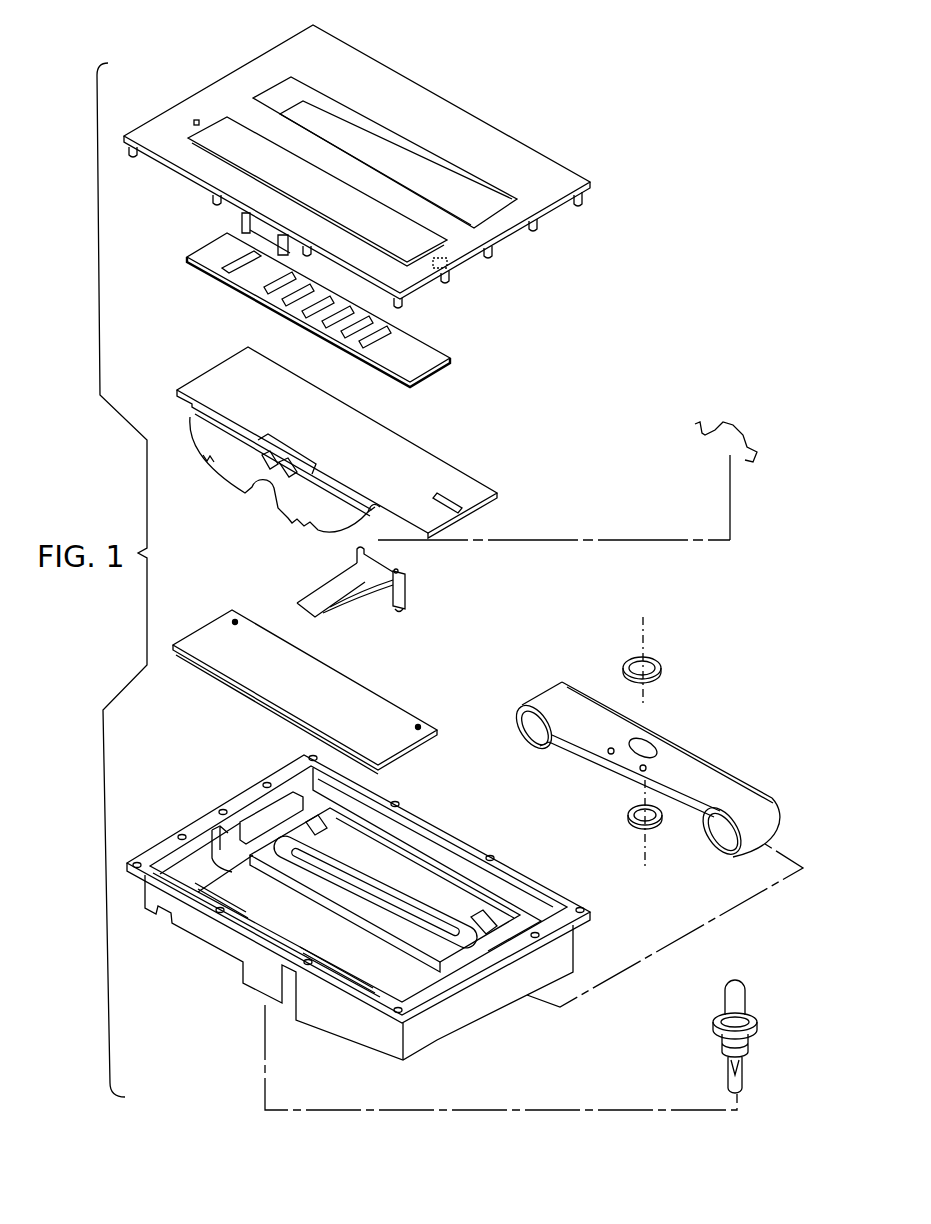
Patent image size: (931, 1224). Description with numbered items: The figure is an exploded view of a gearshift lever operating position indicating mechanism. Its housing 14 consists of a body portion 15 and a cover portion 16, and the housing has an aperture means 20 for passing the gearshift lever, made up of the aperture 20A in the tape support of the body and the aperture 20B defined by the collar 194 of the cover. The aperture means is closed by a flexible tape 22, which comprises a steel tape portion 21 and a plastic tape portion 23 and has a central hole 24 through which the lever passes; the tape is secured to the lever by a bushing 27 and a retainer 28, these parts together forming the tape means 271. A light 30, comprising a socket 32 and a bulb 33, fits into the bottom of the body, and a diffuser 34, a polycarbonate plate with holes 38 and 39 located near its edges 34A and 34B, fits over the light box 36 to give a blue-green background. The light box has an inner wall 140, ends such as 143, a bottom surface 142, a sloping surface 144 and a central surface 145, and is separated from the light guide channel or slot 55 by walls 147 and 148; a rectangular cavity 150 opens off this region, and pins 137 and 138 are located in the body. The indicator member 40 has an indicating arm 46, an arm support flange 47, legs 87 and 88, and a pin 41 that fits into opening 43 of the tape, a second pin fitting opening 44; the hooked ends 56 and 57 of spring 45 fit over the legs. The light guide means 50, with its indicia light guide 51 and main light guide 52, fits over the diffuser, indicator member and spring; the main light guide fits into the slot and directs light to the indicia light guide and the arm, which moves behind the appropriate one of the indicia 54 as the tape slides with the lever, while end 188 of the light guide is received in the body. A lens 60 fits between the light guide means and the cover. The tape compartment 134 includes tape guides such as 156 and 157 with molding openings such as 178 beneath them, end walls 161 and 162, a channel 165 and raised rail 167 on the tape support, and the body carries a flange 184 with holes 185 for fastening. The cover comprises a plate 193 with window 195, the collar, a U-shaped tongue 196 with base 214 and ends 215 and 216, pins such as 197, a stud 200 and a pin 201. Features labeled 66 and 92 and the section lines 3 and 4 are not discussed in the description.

The housing 14 is at (180, 1046).
The body portion 15 is at (383, 917).
The cover portion 16 is at (567, 182).
The aperture means 20 is at (394, 170).
The aperture 20A is at (415, 872).
The aperture 20B is at (448, 185).
The steel tape portion 21 is at (768, 800).
The flexible tape 22 is at (659, 771).
The plastic tape portion 23 is at (723, 795).
The hole 24 is at (660, 744).
The bushing 27 is at (663, 667).
The retainer 28 is at (636, 823).
The light 30 is at (728, 1036).
The socket 32 is at (715, 1032).
The bulb 33 is at (723, 998).
The diffuser 34 is at (328, 684).
The edge 34A is at (407, 708).
The edge 34B is at (403, 755).
The light box 36 is at (447, 983).
The hole 38 is at (233, 621).
The hole 39 is at (420, 727).
The indicator member 40 is at (378, 596).
The pin 41 is at (400, 611).
The opening 43 is at (640, 769).
The opening 44 is at (608, 752).
The spring 45 is at (731, 441).
The indicating arm 46 is at (346, 605).
The arm support flange 47 is at (401, 577).
The light guide means 50 is at (369, 455).
The indicia light guide 51 is at (422, 460).
The main light guide 52 is at (283, 508).
The indicia 54 is at (386, 471).
The slot 55 is at (208, 898).
The hooked end 56 is at (758, 455).
The hooked end 57 is at (695, 424).
The lens 60 is at (343, 310).
The mask slot 66 is at (387, 342).
The leg 87 is at (407, 597).
The leg 88 is at (354, 551).
The contact blade 92 is at (335, 586).
The tape compartment 134 is at (452, 903).
The pin 137 is at (235, 850).
The pin 138 is at (487, 957).
The inner wall 140 is at (227, 893).
The bottom surface 142 is at (368, 967).
The end 143 is at (420, 980).
The surface 144 is at (357, 960).
The central surface 145 is at (298, 942).
The wall 147 is at (247, 903).
The wall 148 is at (337, 967).
The rectangular cavity 150 is at (260, 937).
The tape guide 156 is at (315, 823).
The tape guide 157 is at (523, 903).
The end wall 161 is at (263, 820).
The end wall 162 is at (493, 953).
The channel 165 is at (310, 885).
The raised rail 167 is at (470, 922).
The opening 178 is at (375, 810).
The flange 184 is at (573, 900).
The hole 185 is at (582, 911).
The end 188 is at (480, 507).
The plate 193 is at (345, 52).
The collar 194 is at (480, 193).
The window 195 is at (407, 268).
The tongue 196 is at (266, 235).
The pin 197 is at (581, 206).
The stud 200 is at (437, 258).
The pin 201 is at (195, 120).
The base 214 is at (250, 218).
The end 215 is at (289, 243).
The end 216 is at (242, 220).
The tape means 271 is at (642, 603).
The section line 3 is at (643, 617).
The section line 4 is at (645, 780).